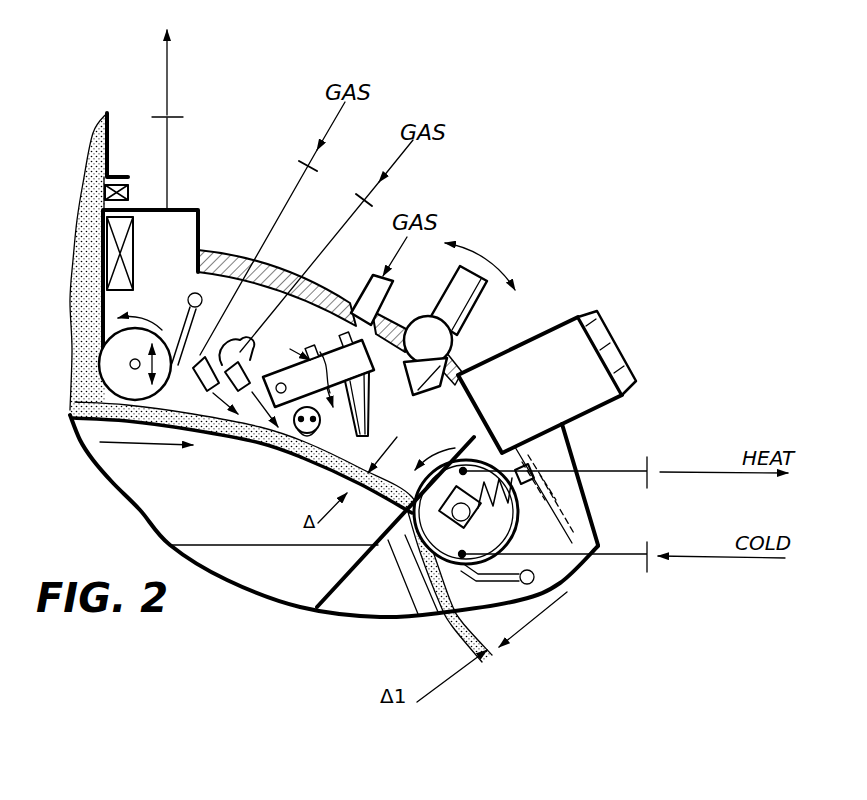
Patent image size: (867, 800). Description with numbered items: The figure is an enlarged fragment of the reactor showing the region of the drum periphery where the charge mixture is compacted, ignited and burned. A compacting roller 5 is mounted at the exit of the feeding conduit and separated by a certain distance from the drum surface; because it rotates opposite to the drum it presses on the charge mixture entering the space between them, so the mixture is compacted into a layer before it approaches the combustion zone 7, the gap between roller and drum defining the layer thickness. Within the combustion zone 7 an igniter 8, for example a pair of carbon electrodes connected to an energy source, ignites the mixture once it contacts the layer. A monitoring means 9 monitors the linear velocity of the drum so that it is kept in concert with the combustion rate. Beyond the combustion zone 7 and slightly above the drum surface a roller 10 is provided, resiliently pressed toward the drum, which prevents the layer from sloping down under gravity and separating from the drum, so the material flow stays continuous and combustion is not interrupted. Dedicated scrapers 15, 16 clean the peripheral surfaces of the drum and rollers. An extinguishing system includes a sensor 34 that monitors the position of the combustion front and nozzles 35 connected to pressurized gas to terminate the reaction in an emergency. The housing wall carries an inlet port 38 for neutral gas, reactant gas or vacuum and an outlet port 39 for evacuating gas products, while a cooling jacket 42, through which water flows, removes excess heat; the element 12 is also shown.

The compacting roller 5 is at (100, 358).
The combustion zone 7 is at (378, 494).
The igniter 8 is at (363, 403).
The monitoring means 9 is at (461, 307).
The roller 10 is at (468, 470).
The duct 12 is at (430, 583).
The scraper 15 is at (188, 312).
The scraper 16 is at (513, 578).
The sensor 34 is at (290, 430).
The nozzles 35 is at (252, 381).
The inlet port 38 is at (360, 286).
The outlet port 39 is at (167, 173).
The cooling jacket 42 is at (498, 528).